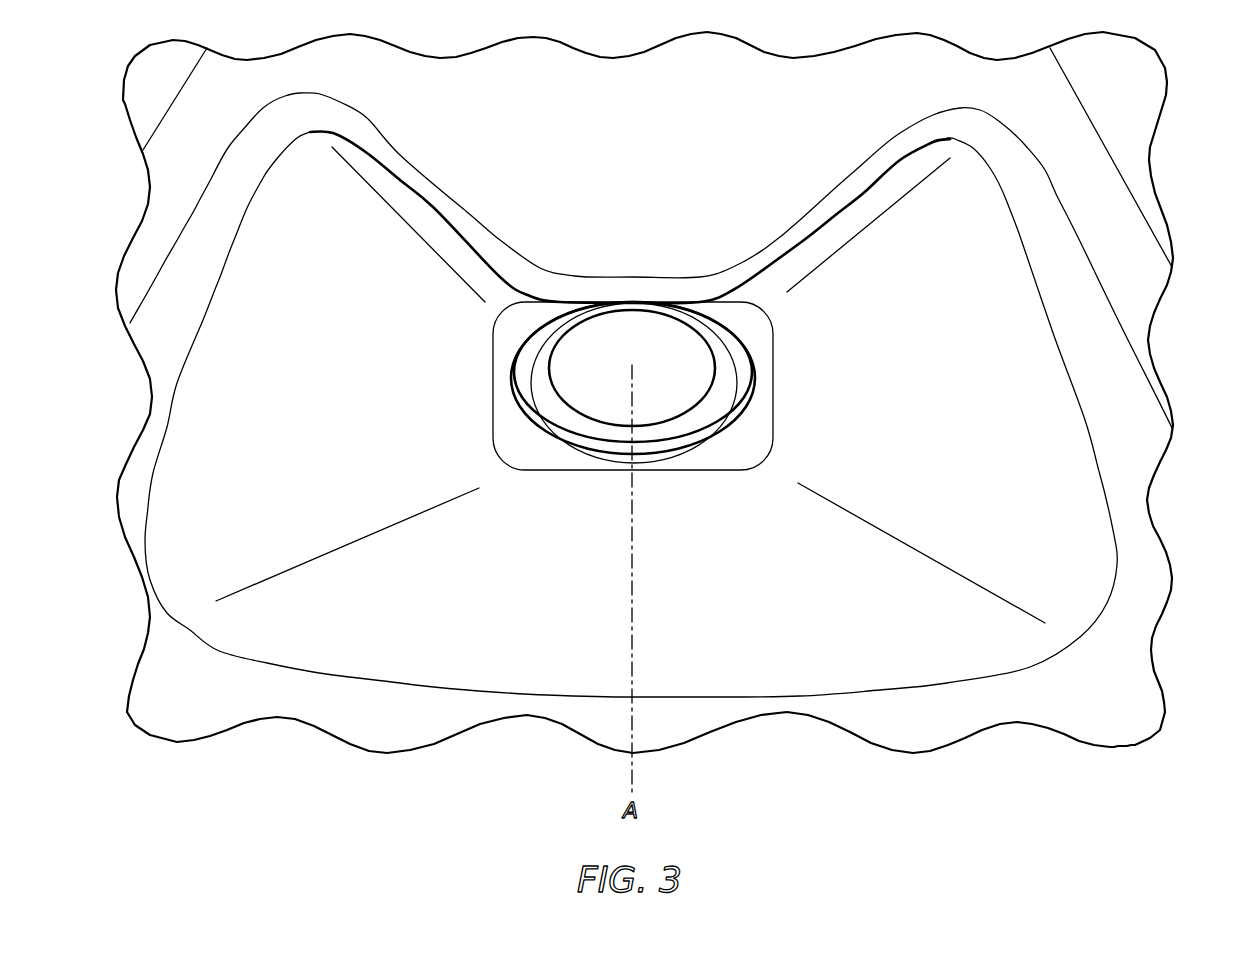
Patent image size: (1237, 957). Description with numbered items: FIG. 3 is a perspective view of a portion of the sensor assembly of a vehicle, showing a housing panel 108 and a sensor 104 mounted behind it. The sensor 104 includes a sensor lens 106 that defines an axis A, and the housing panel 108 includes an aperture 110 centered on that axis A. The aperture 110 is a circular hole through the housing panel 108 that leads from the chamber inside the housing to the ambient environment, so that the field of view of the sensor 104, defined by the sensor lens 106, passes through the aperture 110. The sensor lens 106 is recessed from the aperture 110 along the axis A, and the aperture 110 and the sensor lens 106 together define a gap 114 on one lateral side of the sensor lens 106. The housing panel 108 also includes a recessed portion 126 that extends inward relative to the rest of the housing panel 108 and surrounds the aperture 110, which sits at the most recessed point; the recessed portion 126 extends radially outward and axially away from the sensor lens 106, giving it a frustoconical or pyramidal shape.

The sensor 104 is at (723, 324).
The sensor lens 106 is at (653, 394).
The housing panel 108 is at (1105, 210).
The aperture 110 is at (553, 436).
The gap 114 is at (737, 402).
The recessed portion 126 is at (878, 657).